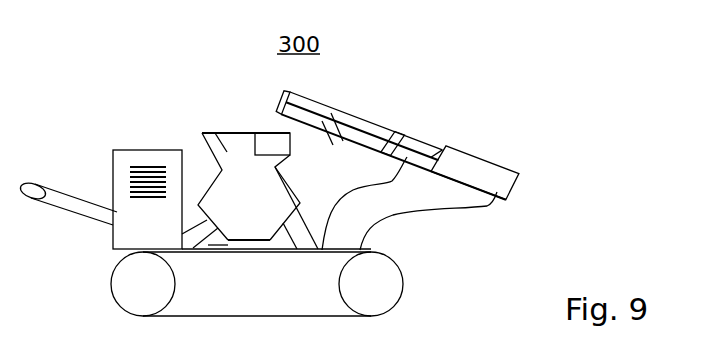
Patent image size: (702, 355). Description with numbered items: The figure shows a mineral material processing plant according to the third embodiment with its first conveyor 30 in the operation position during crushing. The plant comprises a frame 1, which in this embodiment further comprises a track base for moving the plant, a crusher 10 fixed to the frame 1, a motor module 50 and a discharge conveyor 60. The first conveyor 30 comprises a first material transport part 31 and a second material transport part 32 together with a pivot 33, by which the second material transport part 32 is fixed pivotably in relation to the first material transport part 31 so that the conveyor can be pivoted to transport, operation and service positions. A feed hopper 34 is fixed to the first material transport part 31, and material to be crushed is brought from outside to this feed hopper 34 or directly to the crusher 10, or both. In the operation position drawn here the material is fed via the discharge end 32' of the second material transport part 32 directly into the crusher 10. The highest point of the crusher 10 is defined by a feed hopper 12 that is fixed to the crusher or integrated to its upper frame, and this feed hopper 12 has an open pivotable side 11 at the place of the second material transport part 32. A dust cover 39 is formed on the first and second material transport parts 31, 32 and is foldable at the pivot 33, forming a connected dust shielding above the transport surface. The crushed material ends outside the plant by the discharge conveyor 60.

The frame 1 is at (259, 296).
The crusher 10 is at (266, 191).
The open pivotable side 11 is at (259, 111).
The feed hopper 12 is at (212, 117).
The first conveyor 30 is at (423, 160).
The first material transport part 31 is at (446, 212).
The second material transport part 32 is at (362, 119).
The discharge end 32' is at (366, 111).
The pivot 33 is at (402, 124).
The feed hopper 34 is at (488, 144).
The dust cover 39 is at (402, 85).
The motor module 50 is at (150, 158).
The discharge conveyor 60 is at (67, 146).